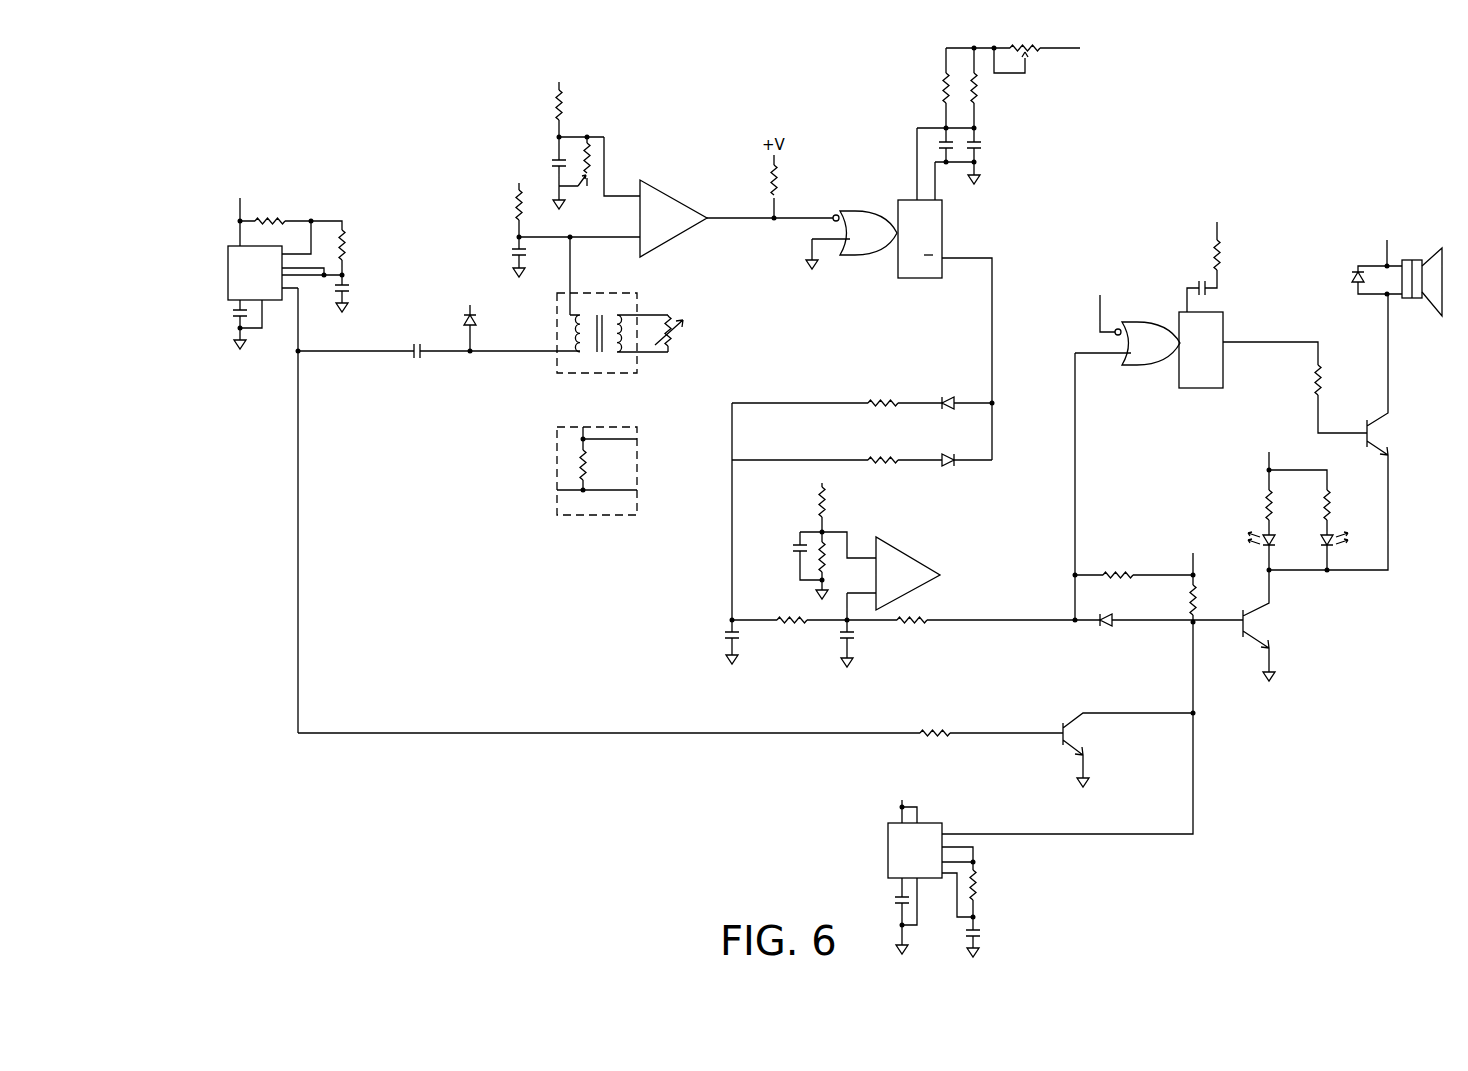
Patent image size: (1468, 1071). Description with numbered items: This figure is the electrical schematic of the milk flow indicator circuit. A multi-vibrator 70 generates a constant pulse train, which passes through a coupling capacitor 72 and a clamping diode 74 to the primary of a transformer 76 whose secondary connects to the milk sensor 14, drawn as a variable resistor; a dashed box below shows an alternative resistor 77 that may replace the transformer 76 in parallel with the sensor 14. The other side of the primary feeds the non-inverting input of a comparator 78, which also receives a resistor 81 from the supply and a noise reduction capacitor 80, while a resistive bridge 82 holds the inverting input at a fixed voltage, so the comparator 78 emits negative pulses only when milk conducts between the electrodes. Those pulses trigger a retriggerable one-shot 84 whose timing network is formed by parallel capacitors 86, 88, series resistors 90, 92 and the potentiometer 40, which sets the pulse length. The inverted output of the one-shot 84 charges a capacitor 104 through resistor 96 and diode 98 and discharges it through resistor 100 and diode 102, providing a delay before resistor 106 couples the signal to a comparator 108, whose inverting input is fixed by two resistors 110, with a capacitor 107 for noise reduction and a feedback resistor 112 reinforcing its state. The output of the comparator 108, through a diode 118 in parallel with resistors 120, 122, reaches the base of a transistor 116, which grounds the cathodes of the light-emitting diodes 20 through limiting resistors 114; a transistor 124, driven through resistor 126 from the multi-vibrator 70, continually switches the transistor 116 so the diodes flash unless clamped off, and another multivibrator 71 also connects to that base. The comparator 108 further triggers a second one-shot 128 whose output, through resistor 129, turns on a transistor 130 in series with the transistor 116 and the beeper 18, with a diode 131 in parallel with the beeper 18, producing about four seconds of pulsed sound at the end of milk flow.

The multi-vibrator 70 is at (230, 272).
The multivibrator 71 is at (890, 850).
The coupling capacitor 72 is at (413, 360).
The clamping diode 74 is at (478, 320).
The transformer 76 is at (593, 362).
The resistor 77 is at (578, 465).
The milk sensor 14 is at (680, 334).
The comparator 78 is at (676, 208).
The noise reduction capacitor 80 is at (516, 248).
The resistor 81 is at (513, 195).
The resistive bridge 82 is at (556, 112).
The retriggerable one-shot 84 is at (928, 234).
The capacitor 86 is at (978, 150).
The capacitor 88 is at (943, 140).
The resistor 90 is at (978, 90).
The resistor 92 is at (942, 95).
The potentiometer 40 is at (1040, 44).
The resistor 96 is at (878, 398).
The diode 98 is at (948, 397).
The resistor 100 is at (880, 458).
The diode 102 is at (950, 455).
The capacitor 104 is at (728, 635).
The resistor 106 is at (793, 630).
The capacitor 107 is at (852, 640).
The comparator 108 is at (903, 555).
The resistors 110 is at (826, 510).
The resistor 112 is at (918, 628).
The limiting resistors 114 is at (1264, 503).
The transistor 116 is at (1258, 630).
The diode 118 is at (1105, 632).
The resistor 120 is at (1110, 568).
The resistor 122 is at (1198, 600).
The transistor 124 is at (1058, 728).
The resistor 126 is at (940, 728).
The second one-shot 128 is at (1199, 382).
The resistor 129 is at (1322, 385).
The transistor 130 is at (1378, 430).
The diode 131 is at (1350, 277).
The beeper 18 is at (1437, 316).
The light-emitting diode 20 is at (1320, 538).